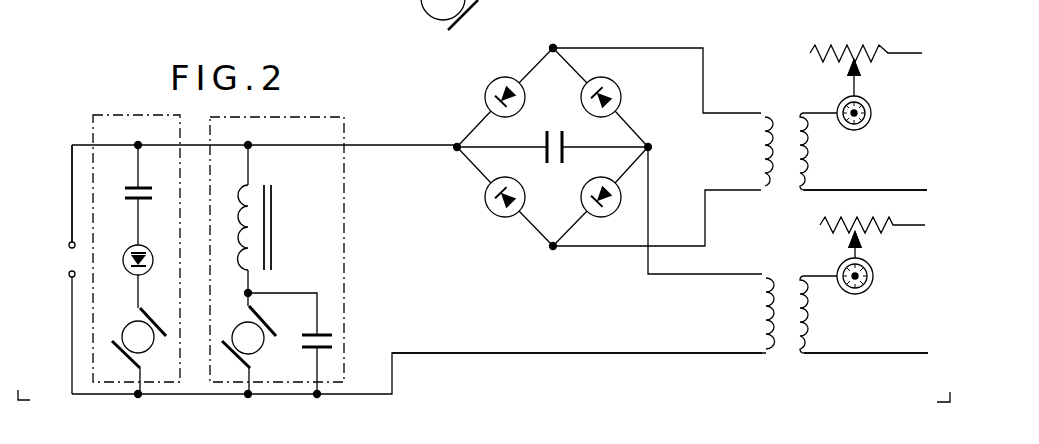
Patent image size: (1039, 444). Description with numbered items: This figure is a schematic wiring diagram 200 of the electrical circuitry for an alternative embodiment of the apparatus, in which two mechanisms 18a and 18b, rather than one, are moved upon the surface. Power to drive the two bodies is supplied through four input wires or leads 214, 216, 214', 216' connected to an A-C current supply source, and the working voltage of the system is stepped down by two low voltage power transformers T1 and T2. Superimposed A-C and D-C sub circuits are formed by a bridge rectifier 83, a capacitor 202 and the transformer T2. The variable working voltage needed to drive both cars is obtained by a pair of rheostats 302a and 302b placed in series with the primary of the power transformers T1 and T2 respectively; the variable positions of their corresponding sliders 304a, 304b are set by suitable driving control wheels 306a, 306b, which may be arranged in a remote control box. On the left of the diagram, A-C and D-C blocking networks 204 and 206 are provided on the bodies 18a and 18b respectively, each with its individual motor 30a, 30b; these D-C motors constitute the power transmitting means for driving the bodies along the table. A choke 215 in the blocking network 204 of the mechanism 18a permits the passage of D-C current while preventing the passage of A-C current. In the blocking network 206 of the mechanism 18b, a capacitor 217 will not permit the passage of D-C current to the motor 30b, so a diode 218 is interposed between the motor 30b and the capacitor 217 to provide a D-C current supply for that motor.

The mechanism 18b is at (95, 112).
The capacitor 217 is at (127, 186).
The blocking network 206 is at (110, 210).
The diode 218 is at (122, 258).
The motor 30b is at (125, 326).
The mechanism 18a is at (346, 134).
The blocking network 204 is at (296, 213).
The choke 215 is at (258, 240).
The motor 30a is at (264, 343).
The schematic wiring diagram 200 is at (686, 22).
The bridge rectifier 83 is at (573, 41).
The capacitor 202 is at (546, 164).
The low voltage power transformer T1 is at (786, 110).
The low voltage power transformer T2 is at (792, 276).
The slider 304a is at (848, 90).
The input wire 214 is at (869, 31).
The rheostat 302a is at (877, 75).
The driving control wheel 306a is at (849, 131).
The input wire 216 is at (866, 170).
The slider 304b is at (848, 255).
The input wire 214' is at (881, 238).
The rheostat 302b is at (878, 250).
The driving control wheel 306b is at (853, 295).
The input wire 216' is at (866, 371).